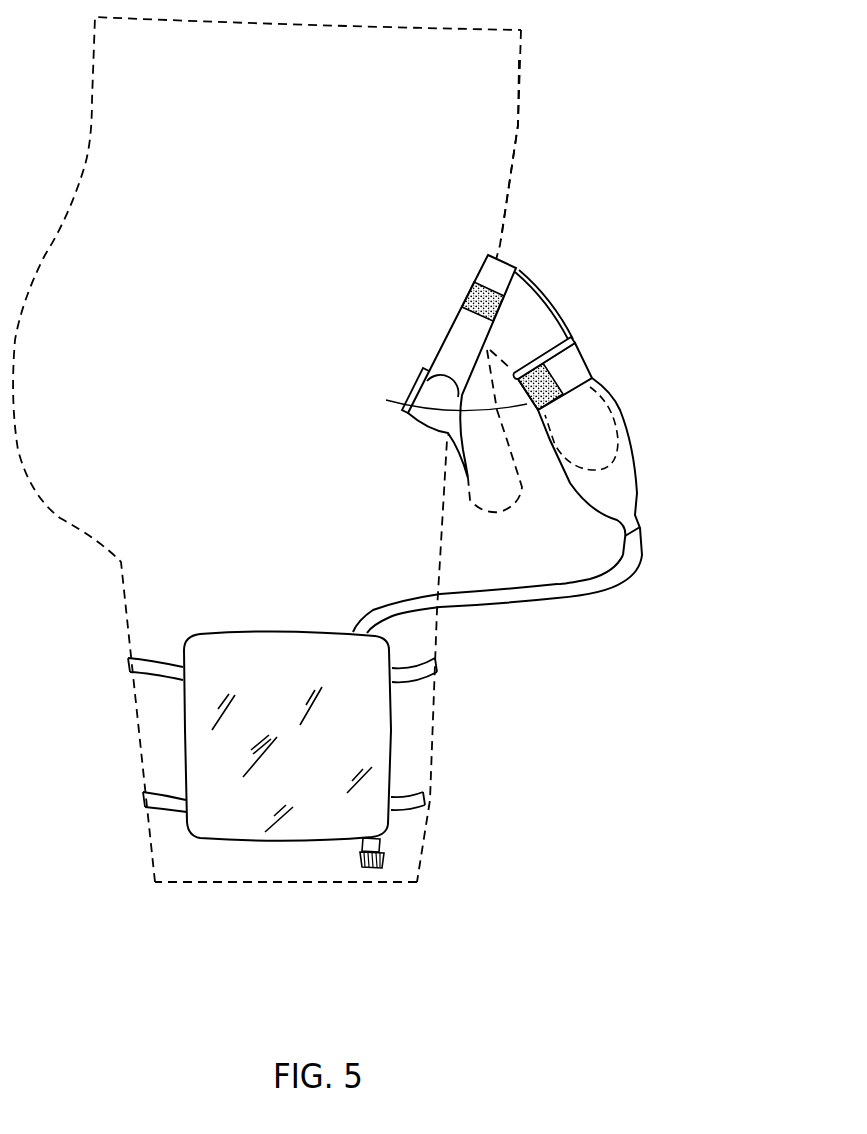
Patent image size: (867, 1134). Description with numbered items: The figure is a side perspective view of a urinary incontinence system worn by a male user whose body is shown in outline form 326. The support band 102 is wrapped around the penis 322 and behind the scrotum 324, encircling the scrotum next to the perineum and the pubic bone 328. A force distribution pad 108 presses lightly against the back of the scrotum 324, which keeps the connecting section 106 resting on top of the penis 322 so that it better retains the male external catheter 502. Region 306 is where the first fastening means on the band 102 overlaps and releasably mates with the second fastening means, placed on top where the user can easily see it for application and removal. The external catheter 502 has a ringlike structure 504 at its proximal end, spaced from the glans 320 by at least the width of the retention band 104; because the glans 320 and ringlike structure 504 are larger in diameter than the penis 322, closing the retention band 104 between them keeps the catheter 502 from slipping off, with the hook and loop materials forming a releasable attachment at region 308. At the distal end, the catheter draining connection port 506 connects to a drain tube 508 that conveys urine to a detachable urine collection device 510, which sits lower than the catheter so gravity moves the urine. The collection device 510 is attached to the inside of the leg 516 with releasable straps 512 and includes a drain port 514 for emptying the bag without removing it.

The support band 102 is at (443, 341).
The retention band 104 is at (527, 404).
The connecting section 106 is at (538, 283).
The force distribution pad 108 is at (446, 452).
The region 306 is at (500, 268).
The region 308 is at (571, 361).
The glans 320 is at (598, 418).
The penis 322 is at (524, 329).
The scrotum 324 is at (490, 492).
The outline form 326 is at (524, 124).
The pubic bone 328 is at (509, 236).
The male external catheter 502 is at (640, 468).
The ringlike structure 504 is at (552, 344).
The catheter draining connection port 506 is at (644, 517).
The drain tube 508 is at (625, 583).
The urine collection device 510 is at (398, 728).
The releasable straps 512 is at (128, 661).
The drain port 514 is at (393, 848).
The leg 516 is at (259, 871).